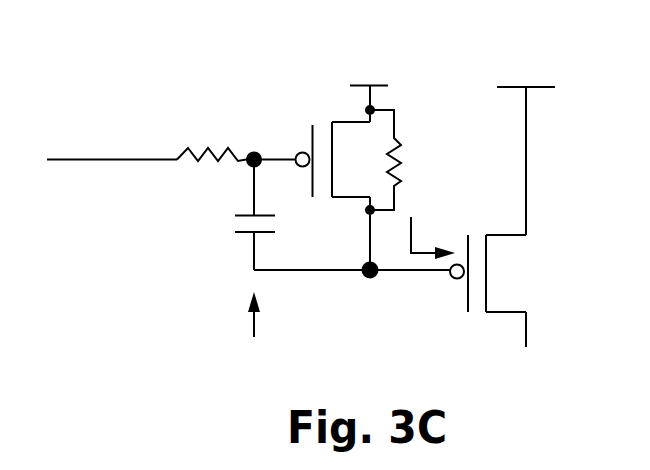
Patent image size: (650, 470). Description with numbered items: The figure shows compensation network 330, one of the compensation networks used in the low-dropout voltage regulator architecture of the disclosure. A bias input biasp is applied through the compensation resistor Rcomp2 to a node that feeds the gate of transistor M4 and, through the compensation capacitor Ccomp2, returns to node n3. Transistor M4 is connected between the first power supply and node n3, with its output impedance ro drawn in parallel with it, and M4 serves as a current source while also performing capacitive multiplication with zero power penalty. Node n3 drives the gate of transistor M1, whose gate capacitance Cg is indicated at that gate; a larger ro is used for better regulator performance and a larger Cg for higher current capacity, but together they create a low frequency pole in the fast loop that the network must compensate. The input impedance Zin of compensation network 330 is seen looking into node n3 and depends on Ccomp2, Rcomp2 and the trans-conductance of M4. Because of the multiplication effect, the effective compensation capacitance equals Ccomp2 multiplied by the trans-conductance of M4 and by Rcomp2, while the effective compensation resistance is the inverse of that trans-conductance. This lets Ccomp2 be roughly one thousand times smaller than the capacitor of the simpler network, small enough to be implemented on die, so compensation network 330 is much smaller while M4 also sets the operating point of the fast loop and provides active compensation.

The compensation network 330 is at (114, 24).
The element biasp is at (108, 142).
The compensation resistor Rcomp2 is at (209, 140).
The compensation capacitor Ccomp2 is at (210, 218).
The transistor M4 is at (335, 196).
The output impedance of M4 ro is at (400, 160).
The node n3 is at (352, 260).
The gate capacitance of M1 Cg is at (435, 220).
The input impedance of the compensation network Zin is at (254, 329).
The transistor M1 is at (502, 217).